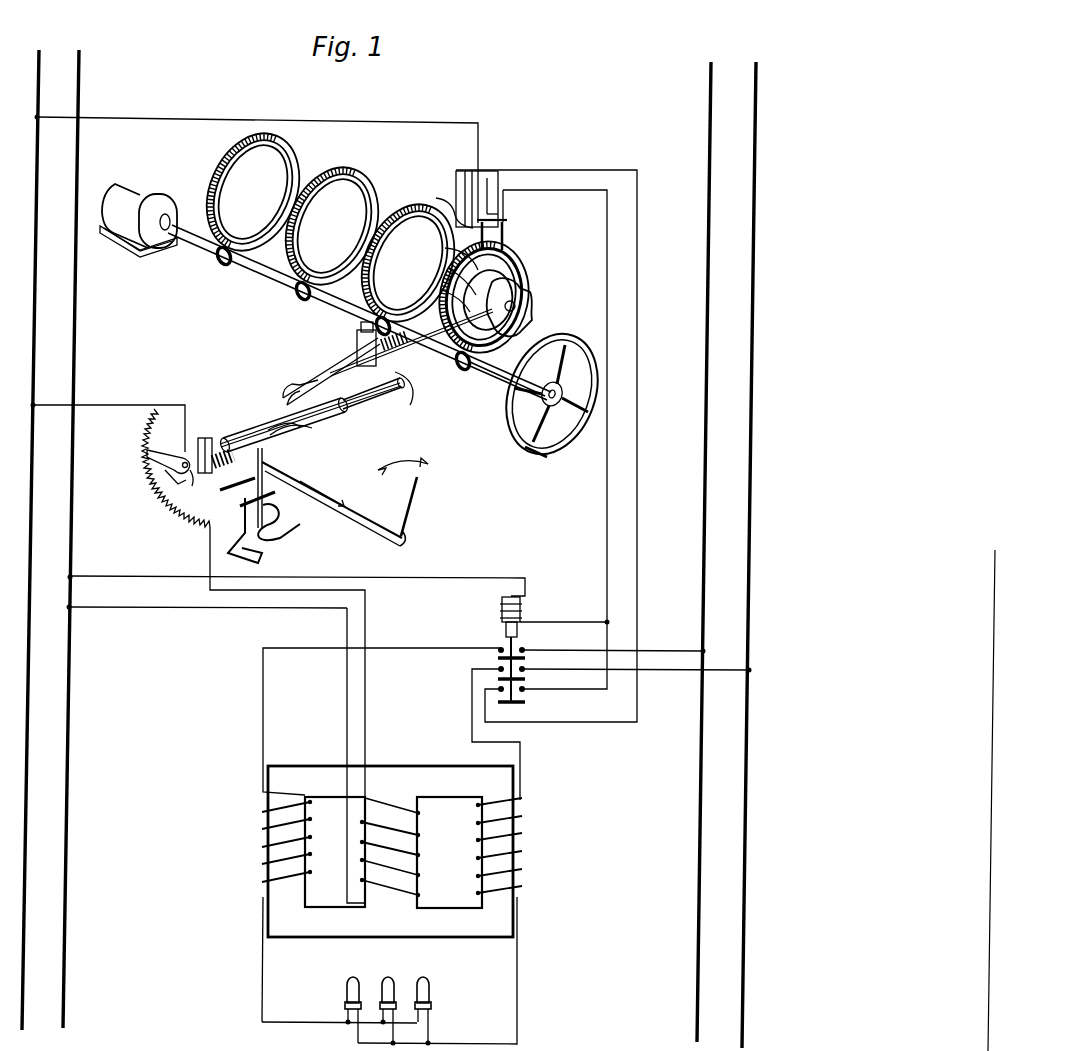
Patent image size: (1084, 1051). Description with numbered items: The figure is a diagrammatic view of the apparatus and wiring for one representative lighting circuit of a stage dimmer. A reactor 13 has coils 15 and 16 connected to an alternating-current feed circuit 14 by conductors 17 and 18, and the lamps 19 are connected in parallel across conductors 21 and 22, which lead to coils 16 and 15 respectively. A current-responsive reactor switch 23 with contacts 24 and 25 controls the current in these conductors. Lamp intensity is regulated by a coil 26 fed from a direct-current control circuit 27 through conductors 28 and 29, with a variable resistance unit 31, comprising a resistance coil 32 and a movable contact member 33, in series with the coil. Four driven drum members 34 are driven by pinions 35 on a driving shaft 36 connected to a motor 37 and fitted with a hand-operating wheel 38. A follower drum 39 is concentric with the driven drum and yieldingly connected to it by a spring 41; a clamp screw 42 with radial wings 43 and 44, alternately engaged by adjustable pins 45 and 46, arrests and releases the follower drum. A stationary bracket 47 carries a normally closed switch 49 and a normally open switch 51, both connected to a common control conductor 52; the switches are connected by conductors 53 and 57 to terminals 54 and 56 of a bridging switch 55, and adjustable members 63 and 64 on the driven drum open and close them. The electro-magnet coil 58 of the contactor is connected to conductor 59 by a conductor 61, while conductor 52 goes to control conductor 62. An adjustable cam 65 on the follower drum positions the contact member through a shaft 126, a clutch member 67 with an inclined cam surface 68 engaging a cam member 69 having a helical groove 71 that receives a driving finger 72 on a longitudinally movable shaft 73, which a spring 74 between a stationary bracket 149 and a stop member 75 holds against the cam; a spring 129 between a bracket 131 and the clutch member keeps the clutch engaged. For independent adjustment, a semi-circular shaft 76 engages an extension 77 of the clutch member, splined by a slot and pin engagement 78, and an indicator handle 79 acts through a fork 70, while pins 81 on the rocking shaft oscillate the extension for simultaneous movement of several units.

The reactor 13 is at (410, 763).
The alternating-current feed circuit 14 is at (734, 566).
The coil 15 is at (514, 849).
The coil 16 is at (262, 862).
The conductor 17 is at (670, 671).
The conductor 18 is at (666, 650).
The lamps 19 is at (420, 983).
The conductor 21 is at (263, 1005).
The conductor 22 is at (517, 985).
The current-responsive reactor switch 23 is at (492, 641).
The contact 24 is at (520, 660).
The contact 25 is at (526, 680).
The coil 26 is at (420, 838).
The direct-current control circuit 27 is at (58, 697).
The conductor 28 is at (132, 608).
The conductor 29 is at (118, 405).
The variable resistance unit 31 is at (168, 452).
The resistance coil 32 is at (145, 446).
The movable contact member 33 is at (168, 478).
The driven rotatable drum member 34 is at (300, 162).
The pinion 35 is at (298, 291).
The driving shaft 36 is at (195, 250).
The motor 37 is at (166, 196).
The hand-operating wheel 38 is at (556, 438).
The follower drum 39 is at (500, 268).
The spring 41 is at (488, 350).
The clamp screw 42 is at (487, 293).
The radial wing 43 is at (448, 268).
The radial wing 44 is at (442, 290).
The adjustable pin 45 is at (450, 335).
The adjustable pin 46 is at (445, 248).
The stationary bracket 47 is at (483, 190).
The normally closed switch 49 is at (445, 205).
The normally open switch 51 is at (486, 222).
The common control conductor 52 is at (458, 123).
The conductor 53 is at (580, 170).
The terminal 54 is at (498, 689).
The bridging switch 55 is at (514, 704).
The terminal 56 is at (522, 690).
The conductor 57 is at (607, 532).
The electro-magnet coil 58 is at (522, 604).
The conductor 59 is at (72, 577).
The conductor 61 is at (338, 570).
The control conductor 62 is at (33, 358).
The adjustable member 63 is at (490, 232).
The adjustable member 64 is at (505, 240).
The adjustable cam 65 is at (533, 294).
The rotatable clutch member 67 is at (245, 432).
The inclined cam surface 68 is at (280, 440).
The cam member 69 is at (375, 400).
The fork 70 is at (285, 522).
The helical groove 71 is at (315, 372).
The driving finger 72 is at (285, 404).
The non-rotatable longitudinal movable shaft 73 is at (337, 364).
The spring 74 is at (412, 392).
The stop member 75 is at (405, 348).
The semi-circular shaft 76 is at (350, 505).
The extension 77 is at (263, 463).
The slot and pin engagement 78 is at (300, 430).
The indicator handle 79 is at (258, 560).
The pins 81 is at (238, 490).
The shaft 126 is at (190, 486).
The spring 129 is at (224, 452).
The bracket 131 is at (204, 438).
The stationary bracket 149 is at (358, 334).